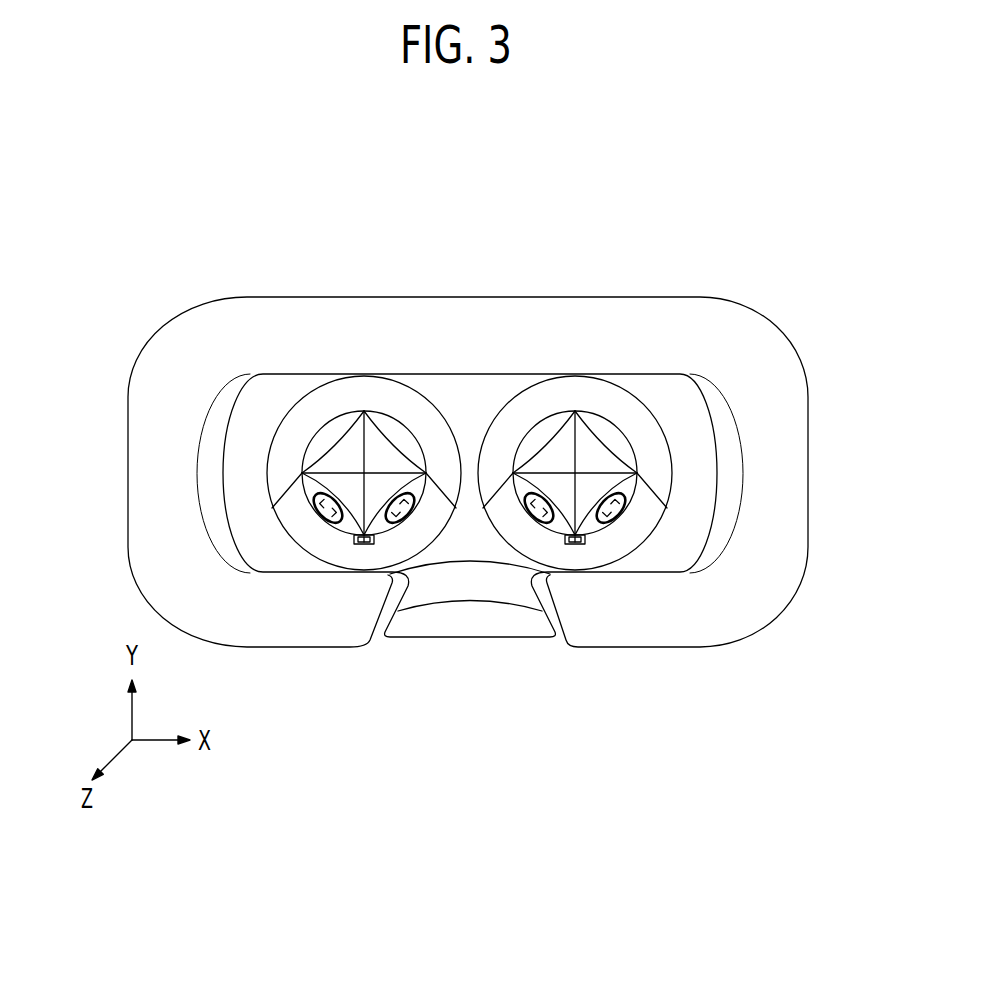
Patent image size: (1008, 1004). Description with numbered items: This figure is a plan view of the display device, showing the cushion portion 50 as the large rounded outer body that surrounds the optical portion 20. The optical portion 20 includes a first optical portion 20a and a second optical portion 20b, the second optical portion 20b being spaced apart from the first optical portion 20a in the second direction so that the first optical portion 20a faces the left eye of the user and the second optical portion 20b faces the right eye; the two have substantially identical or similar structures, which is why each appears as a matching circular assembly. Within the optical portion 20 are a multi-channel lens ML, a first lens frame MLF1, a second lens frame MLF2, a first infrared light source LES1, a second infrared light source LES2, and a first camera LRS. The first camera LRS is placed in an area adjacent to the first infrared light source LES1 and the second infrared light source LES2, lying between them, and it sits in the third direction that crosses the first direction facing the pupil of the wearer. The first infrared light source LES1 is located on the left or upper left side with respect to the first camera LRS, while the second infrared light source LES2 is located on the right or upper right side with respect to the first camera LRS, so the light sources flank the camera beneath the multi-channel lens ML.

The cushion portion 50 is at (795, 432).
The optical portion 20 is at (364, 521).
The first optical portion 20a is at (320, 400).
The second optical portion 20b is at (617, 400).
The multi-channel lens ML is at (368, 448).
The first infrared light source LES1 is at (322, 492).
The second infrared light source LES2 is at (390, 515).
The first lens frame MLF1 is at (312, 512).
The second lens frame MLF2 is at (388, 548).
The first camera LRS is at (354, 542).